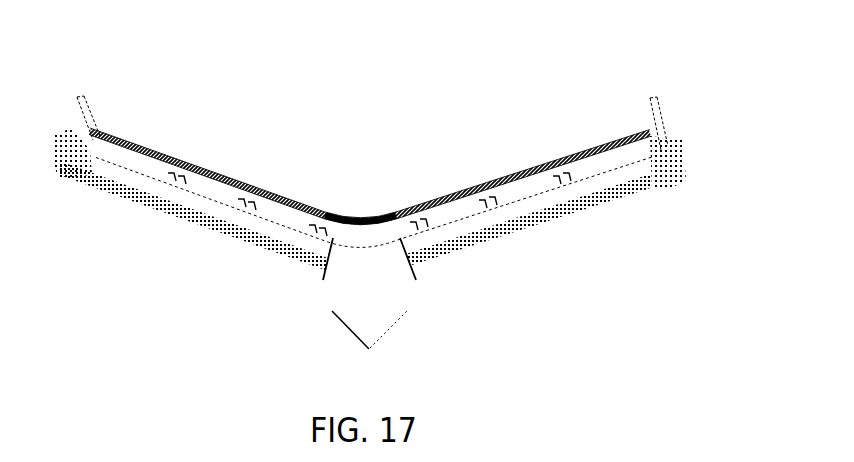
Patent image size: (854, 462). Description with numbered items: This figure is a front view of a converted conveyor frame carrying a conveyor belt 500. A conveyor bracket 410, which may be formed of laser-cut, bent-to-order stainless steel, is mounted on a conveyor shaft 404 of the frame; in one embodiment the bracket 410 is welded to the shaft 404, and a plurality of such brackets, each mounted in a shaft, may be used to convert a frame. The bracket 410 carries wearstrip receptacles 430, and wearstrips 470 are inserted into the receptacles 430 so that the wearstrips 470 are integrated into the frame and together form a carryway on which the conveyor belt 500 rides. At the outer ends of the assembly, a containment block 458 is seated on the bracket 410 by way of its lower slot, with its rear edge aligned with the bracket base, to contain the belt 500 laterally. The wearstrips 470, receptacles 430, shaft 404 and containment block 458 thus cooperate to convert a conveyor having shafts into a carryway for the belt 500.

The shaft 404 is at (350, 260).
The conveyor bracket 410 is at (172, 248).
The wearstrip receptacles 430 is at (165, 177).
The containment block 458 is at (75, 97).
The wearstrips 470 is at (250, 194).
The conveyor belt 500 is at (362, 219).